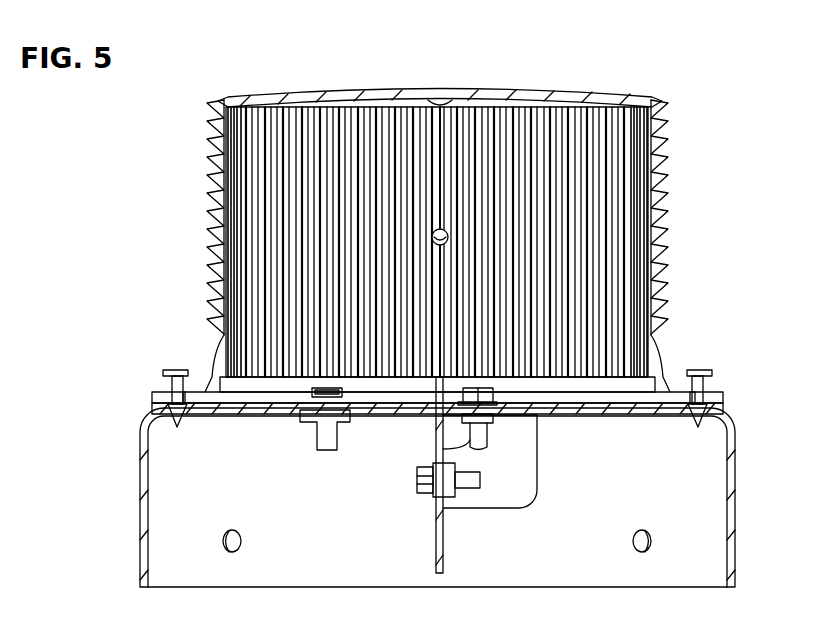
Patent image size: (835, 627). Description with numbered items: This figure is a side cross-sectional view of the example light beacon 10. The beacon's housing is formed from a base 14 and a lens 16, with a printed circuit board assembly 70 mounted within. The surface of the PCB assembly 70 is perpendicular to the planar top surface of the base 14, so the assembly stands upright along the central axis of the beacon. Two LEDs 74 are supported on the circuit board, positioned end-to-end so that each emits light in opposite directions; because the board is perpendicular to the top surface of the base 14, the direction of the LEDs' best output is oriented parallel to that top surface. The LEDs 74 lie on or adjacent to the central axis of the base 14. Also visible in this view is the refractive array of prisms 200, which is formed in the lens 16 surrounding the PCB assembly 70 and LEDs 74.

The light beacon 10 is at (738, 73).
The base 14 is at (141, 498).
The lens 16 is at (212, 205).
The printed circuit board (PCB) assembly 70 is at (436, 553).
The LED 74 is at (436, 232).
The refractive array of prisms 200 is at (623, 130).